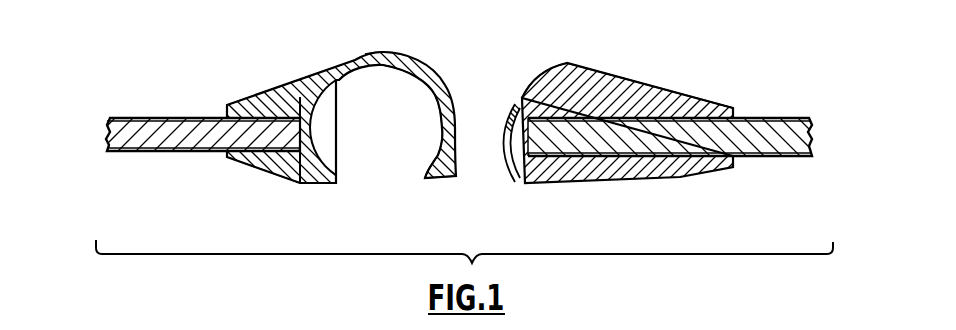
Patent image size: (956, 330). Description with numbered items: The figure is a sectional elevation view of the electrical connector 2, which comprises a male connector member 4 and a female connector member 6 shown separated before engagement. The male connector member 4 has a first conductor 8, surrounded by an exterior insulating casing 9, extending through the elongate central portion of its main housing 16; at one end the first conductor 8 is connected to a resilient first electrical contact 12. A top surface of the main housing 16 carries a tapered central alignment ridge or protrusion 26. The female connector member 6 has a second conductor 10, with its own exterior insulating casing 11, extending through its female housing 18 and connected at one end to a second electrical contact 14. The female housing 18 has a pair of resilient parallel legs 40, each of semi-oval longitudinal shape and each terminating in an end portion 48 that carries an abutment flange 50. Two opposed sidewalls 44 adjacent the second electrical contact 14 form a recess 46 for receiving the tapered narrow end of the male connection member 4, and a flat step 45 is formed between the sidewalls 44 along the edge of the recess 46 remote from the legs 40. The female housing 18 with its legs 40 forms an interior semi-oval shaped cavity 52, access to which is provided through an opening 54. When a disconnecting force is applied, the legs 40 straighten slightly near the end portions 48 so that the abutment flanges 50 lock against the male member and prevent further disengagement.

The electrical connector 2 is at (148, 60).
The male connector member 4 is at (753, 69).
The female connector member 6 is at (157, 192).
The first conductor 8 is at (752, 150).
The exterior insulating casing 9 is at (770, 117).
The second conductor 10 is at (157, 152).
The exterior insulating casing 11 is at (173, 117).
The resilient first electrical contact 12 is at (516, 178).
The second electrical contact 14 is at (317, 157).
The main housing 16 is at (630, 193).
The female housing 18 is at (268, 76).
The tapered central alignment ridge 26 is at (590, 67).
The resilient parallel legs 40 is at (418, 65).
The opposed sidewalls 44 is at (347, 60).
The flat step 45 is at (338, 170).
The recess 46 is at (346, 138).
The end portion 48 is at (427, 182).
The abutment flanges 50 is at (452, 177).
The interior semi-oval shaped cavity 52 is at (416, 98).
The opening 54 is at (405, 182).